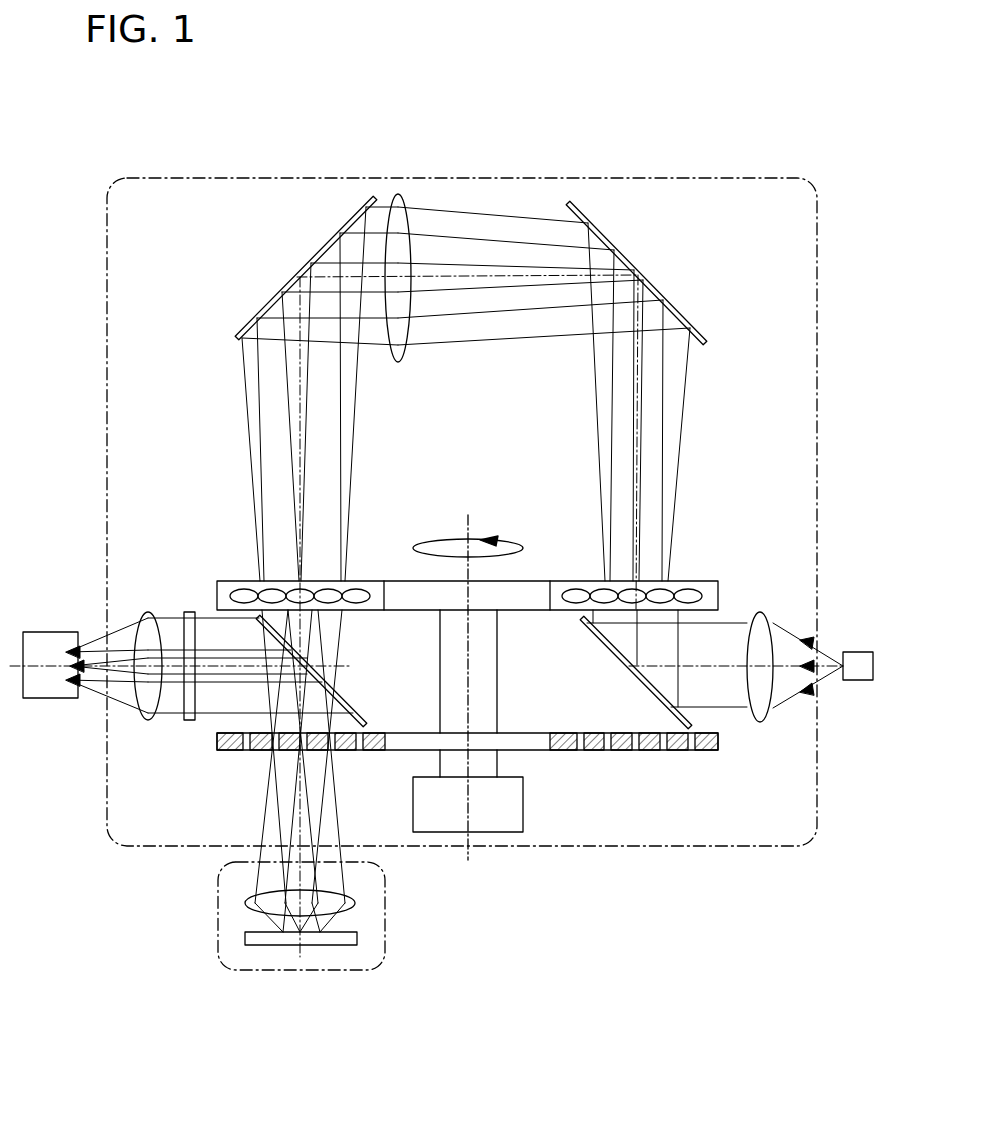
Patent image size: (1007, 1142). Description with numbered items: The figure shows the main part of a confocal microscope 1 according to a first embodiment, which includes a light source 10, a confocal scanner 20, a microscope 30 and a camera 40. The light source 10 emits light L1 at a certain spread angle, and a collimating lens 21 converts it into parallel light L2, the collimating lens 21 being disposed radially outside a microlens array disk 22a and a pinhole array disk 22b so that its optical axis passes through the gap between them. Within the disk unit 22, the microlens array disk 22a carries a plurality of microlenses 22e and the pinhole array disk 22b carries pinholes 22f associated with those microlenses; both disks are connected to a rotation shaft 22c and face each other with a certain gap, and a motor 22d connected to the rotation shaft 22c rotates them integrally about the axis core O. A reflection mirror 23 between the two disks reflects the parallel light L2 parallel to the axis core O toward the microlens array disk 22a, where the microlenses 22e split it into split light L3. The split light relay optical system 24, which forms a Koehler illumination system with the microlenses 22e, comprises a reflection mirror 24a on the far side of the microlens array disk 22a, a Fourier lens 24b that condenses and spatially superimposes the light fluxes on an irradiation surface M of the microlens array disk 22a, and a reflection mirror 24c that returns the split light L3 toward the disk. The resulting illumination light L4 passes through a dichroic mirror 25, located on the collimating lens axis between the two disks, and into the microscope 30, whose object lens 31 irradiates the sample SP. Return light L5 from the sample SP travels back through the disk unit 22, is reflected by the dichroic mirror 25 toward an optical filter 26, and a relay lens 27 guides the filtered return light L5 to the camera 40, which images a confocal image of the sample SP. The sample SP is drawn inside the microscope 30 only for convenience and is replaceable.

The confocal microscope 1 is at (793, 150).
The light source 10 is at (862, 650).
The confocal scanner 20 is at (194, 178).
The collimating lens 21 is at (762, 722).
The disk unit 22 is at (516, 658).
The microlens array disk 22a is at (720, 600).
The pinhole array disk 22b is at (718, 746).
The rotation shaft 22c is at (498, 763).
The motor 22d is at (524, 810).
The microlenses 22e is at (305, 588).
The pinholes 22f is at (335, 752).
The reflection mirror 23 is at (604, 640).
The split light relay optical system 24 is at (464, 235).
The reflection mirror 24a is at (683, 333).
The Fourier lens 24b is at (398, 194).
The reflection mirror 24c is at (270, 325).
The dichroic mirror 25 is at (360, 718).
The optical filter 26 is at (189, 611).
The relay lens 27 is at (148, 611).
The microscope 30 is at (294, 916).
The object lens 31 is at (357, 900).
The camera 40 is at (50, 631).
The light L1 is at (790, 696).
The parallel light L2 is at (735, 622).
The split light L3 is at (672, 398).
The illumination light L4 is at (337, 848).
The return light L5 is at (212, 718).
The irradiation surface M is at (270, 590).
The axis core O is at (469, 521).
The sample SP is at (358, 937).